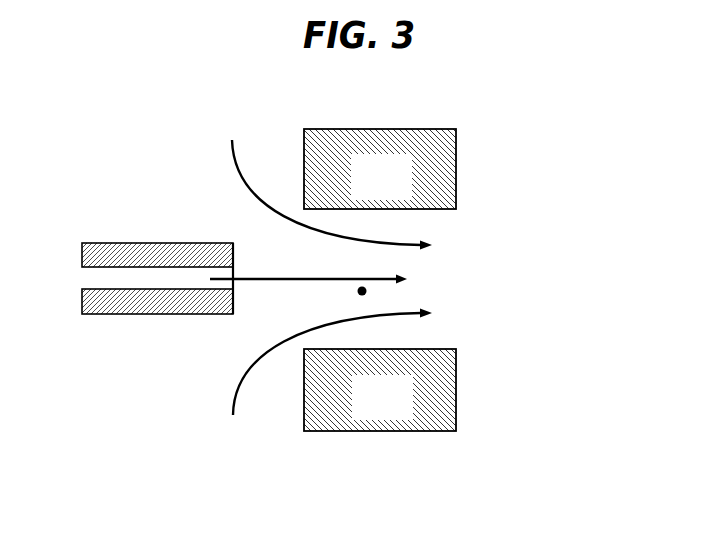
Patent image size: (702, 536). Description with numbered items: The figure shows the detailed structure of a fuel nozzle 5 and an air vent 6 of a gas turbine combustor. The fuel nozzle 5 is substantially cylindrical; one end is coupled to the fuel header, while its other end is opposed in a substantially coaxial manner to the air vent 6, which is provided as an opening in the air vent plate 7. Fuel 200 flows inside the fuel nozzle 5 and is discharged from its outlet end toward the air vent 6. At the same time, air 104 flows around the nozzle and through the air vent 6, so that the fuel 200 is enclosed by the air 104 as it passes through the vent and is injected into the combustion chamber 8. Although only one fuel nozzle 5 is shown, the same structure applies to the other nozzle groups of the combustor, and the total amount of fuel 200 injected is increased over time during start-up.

The fuel nozzle 5 is at (175, 244).
The fuel 200 is at (258, 277).
The air 104 is at (322, 279).
The air vent plate 7 is at (390, 194).
The combustion chamber 8 is at (522, 293).
The air vent 6 is at (365, 294).